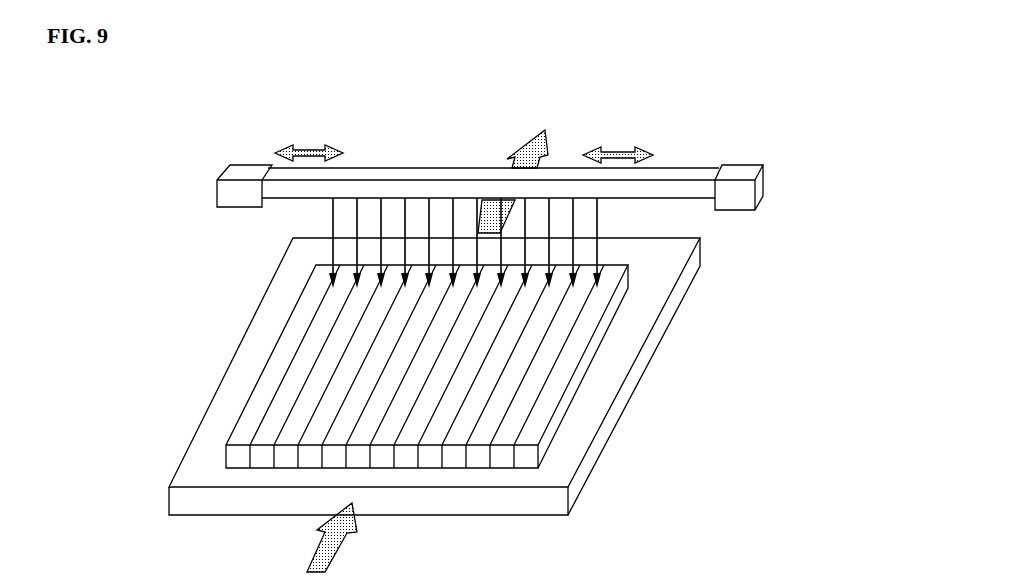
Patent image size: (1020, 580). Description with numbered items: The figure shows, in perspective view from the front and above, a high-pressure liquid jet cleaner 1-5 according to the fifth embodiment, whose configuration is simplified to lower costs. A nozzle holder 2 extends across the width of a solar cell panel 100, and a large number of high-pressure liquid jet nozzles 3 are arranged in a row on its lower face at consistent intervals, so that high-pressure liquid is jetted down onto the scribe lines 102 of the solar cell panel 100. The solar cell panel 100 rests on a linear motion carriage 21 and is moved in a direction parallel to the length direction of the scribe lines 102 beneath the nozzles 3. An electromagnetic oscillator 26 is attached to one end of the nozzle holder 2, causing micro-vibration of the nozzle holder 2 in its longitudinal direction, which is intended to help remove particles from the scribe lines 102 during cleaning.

The linear motion carriage 21 is at (575, 462).
The scribe lines 102 is at (280, 435).
The solar cell panel 100 is at (307, 500).
The nozzle holder 2 is at (697, 168).
The electromagnetic oscillator 26 is at (737, 205).
The high-pressure liquid jet nozzles 3 is at (356, 201).
The high-pressure liquid jet cleaner 1-5 is at (488, 142).